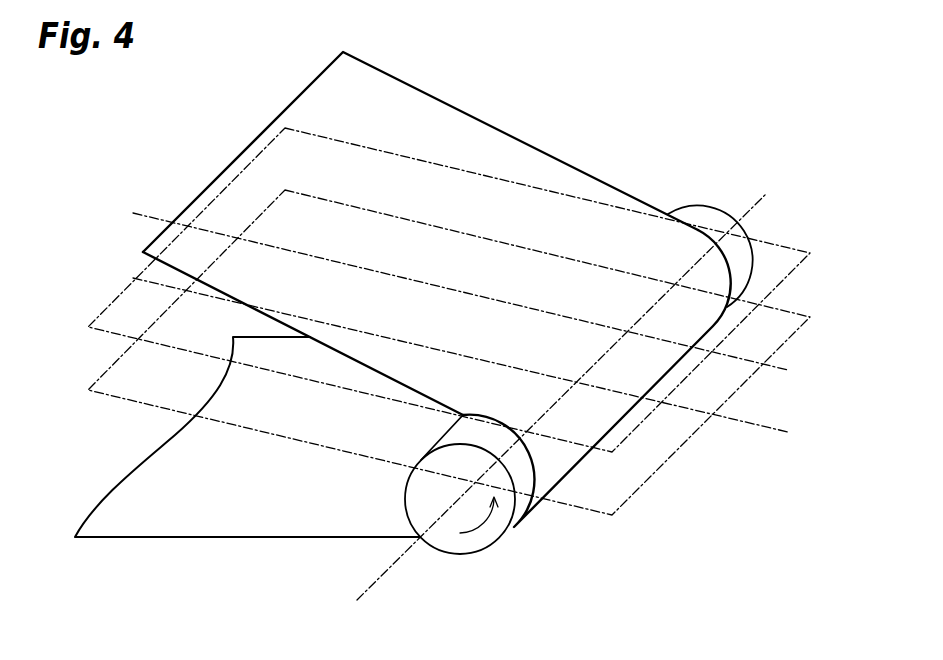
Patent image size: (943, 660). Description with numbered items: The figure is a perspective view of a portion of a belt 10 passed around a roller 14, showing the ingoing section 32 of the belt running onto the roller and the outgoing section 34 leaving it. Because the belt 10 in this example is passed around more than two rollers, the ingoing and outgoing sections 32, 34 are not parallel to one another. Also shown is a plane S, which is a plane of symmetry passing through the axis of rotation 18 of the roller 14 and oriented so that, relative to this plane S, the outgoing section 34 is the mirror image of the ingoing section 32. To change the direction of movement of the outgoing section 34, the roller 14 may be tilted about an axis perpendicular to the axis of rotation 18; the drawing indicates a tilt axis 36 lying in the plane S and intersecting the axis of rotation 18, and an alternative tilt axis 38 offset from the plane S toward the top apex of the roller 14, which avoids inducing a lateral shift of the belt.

The belt 10 is at (437, 270).
The roller 14 is at (450, 545).
The axis of rotation 18 is at (750, 212).
The ingoing section 32 is at (210, 517).
The outgoing section 34 is at (400, 117).
The tilt axis 36 is at (737, 423).
The tilt axis 38 is at (767, 365).
The plane of symmetry S is at (642, 487).